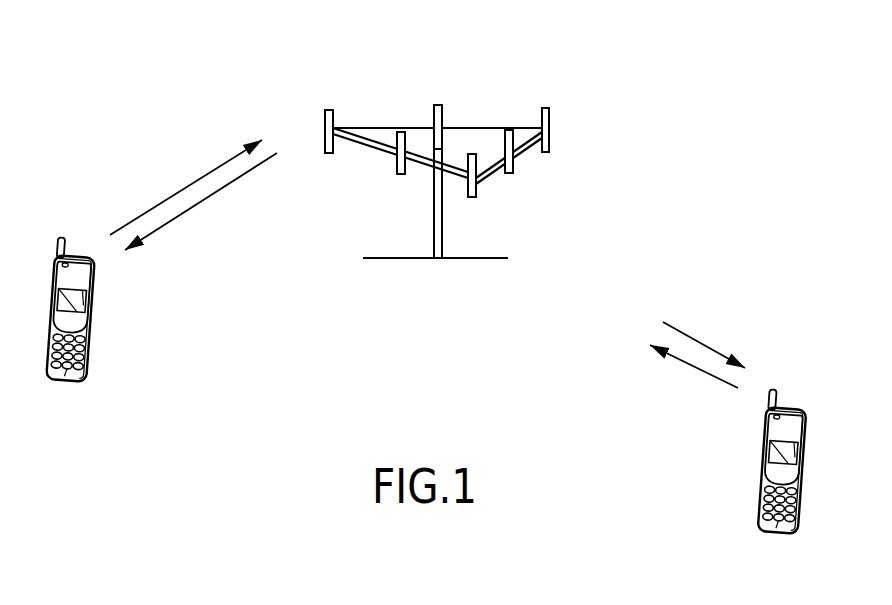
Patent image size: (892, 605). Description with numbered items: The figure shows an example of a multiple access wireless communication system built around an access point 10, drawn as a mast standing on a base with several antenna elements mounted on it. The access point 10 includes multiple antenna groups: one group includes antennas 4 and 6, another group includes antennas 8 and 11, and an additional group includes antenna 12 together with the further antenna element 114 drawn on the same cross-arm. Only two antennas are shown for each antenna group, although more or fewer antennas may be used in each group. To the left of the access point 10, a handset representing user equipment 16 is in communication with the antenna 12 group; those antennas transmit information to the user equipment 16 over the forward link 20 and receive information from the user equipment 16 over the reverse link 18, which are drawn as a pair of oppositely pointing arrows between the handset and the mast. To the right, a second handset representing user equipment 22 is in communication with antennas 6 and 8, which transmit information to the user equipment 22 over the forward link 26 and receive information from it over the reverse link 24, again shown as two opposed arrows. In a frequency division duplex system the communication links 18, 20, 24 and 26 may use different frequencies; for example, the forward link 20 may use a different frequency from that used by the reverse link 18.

The antenna 4 is at (476, 197).
The antenna 6 is at (513, 173).
The antenna 8 is at (549, 133).
The access point 10 is at (417, 258).
The antenna 11 is at (442, 105).
The antenna 12 is at (333, 121).
The antenna element 114 is at (398, 174).
The user equipment 16 is at (73, 257).
The reverse link 18 is at (188, 185).
The forward link 20 is at (207, 198).
The user equipment 22 is at (783, 407).
The reverse link 24 is at (690, 367).
The forward link 26 is at (707, 348).